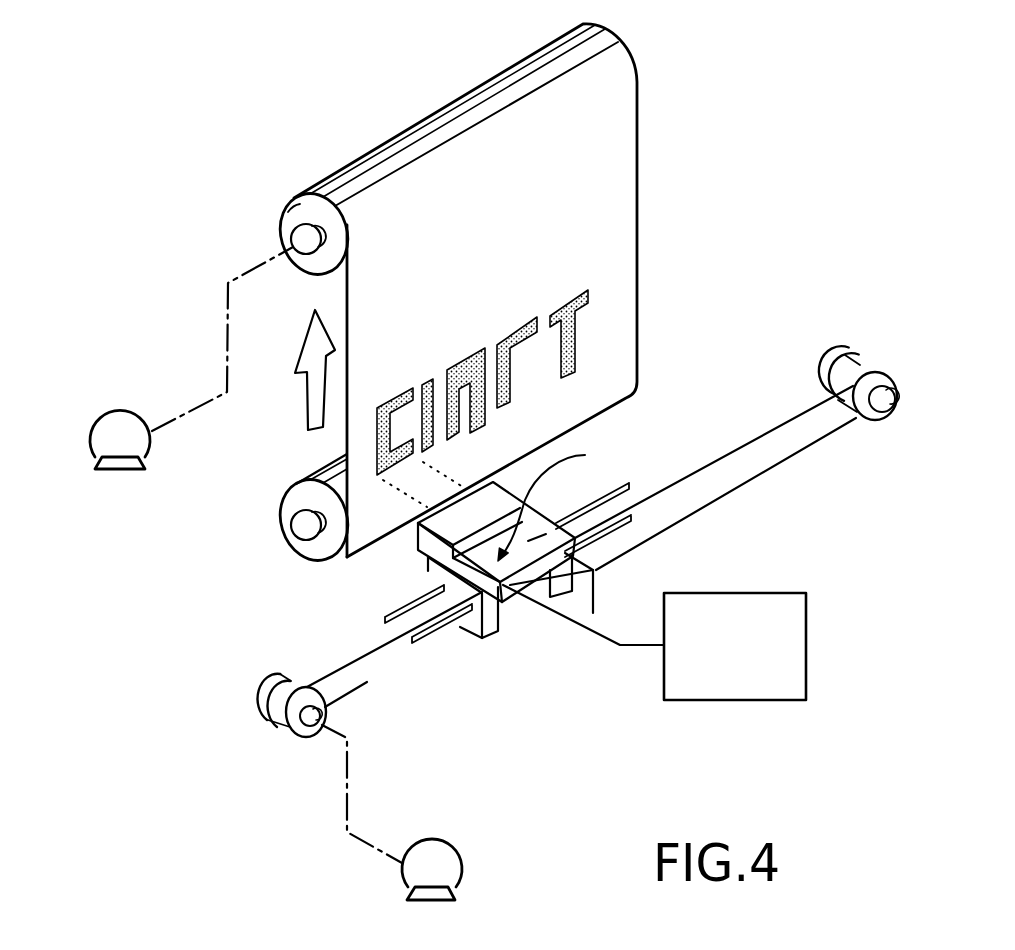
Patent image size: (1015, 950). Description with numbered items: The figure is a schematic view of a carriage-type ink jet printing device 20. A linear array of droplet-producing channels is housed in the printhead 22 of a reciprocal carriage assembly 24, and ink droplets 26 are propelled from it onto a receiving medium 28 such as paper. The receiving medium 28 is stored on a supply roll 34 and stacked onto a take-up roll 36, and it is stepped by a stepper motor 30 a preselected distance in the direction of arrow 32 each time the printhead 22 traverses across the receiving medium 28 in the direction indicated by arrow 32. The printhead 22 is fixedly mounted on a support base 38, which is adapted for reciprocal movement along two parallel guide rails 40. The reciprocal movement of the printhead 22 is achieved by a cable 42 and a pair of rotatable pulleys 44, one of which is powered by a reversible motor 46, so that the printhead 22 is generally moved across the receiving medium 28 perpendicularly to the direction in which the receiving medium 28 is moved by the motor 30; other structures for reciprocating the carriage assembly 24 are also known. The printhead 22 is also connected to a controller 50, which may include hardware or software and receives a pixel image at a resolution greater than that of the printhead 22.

The ink jet printing device 20 is at (712, 215).
The printhead 22 is at (416, 550).
The carriage assembly 24 is at (601, 580).
The ink droplets 26 is at (437, 470).
The receiving medium 28 is at (637, 169).
The motor 30 is at (100, 410).
The arrow 32 is at (305, 400).
The supply roll 34 is at (284, 501).
The take-up roll 36 is at (283, 222).
The support base 38 is at (428, 577).
The guide rails 40 is at (434, 637).
The cable 42 is at (322, 678).
The pulleys 44 is at (897, 392).
The reversible motor 46 is at (430, 833).
The controller 50 is at (807, 618).